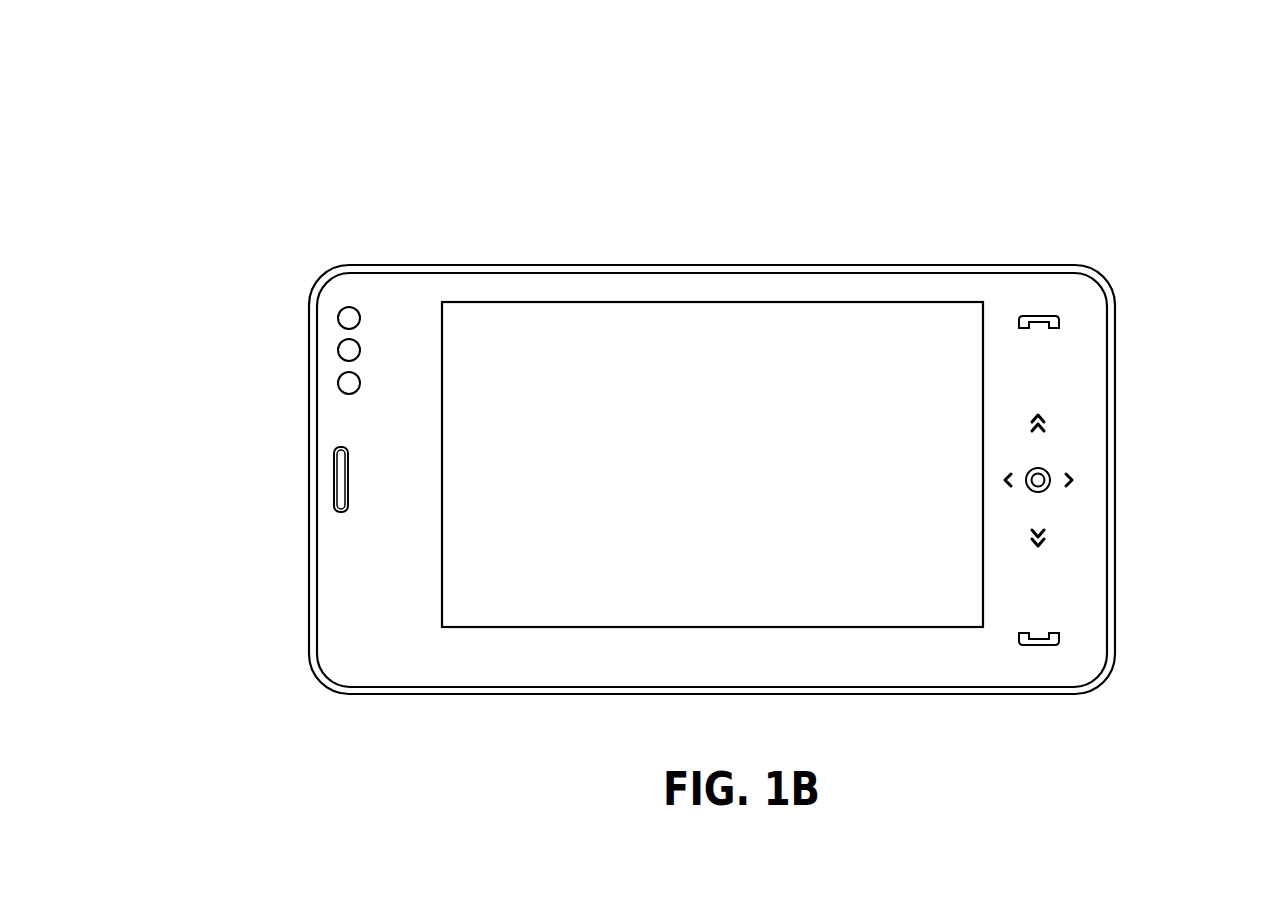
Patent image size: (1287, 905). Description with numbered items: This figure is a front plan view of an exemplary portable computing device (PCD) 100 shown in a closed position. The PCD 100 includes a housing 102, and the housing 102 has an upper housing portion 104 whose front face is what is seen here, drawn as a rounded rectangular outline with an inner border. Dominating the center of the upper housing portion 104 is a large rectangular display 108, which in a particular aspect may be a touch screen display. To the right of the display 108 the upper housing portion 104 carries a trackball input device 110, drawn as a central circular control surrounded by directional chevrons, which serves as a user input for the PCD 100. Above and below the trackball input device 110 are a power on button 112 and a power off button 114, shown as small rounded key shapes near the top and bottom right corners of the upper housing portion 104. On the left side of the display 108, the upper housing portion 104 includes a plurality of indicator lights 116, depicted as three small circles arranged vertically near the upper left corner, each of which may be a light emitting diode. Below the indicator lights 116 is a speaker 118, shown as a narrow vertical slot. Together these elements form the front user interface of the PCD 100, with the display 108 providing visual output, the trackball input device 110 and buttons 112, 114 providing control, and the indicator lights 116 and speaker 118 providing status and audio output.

The portable computing device 100 is at (1160, 212).
The housing 102 is at (345, 265).
The upper housing portion 104 is at (700, 277).
The display 108 is at (716, 604).
The trackball input device 110 is at (1046, 487).
The power on button 112 is at (1059, 645).
The power off button 114 is at (1059, 317).
The indicator lights 116 is at (338, 300).
The speaker 118 is at (339, 483).